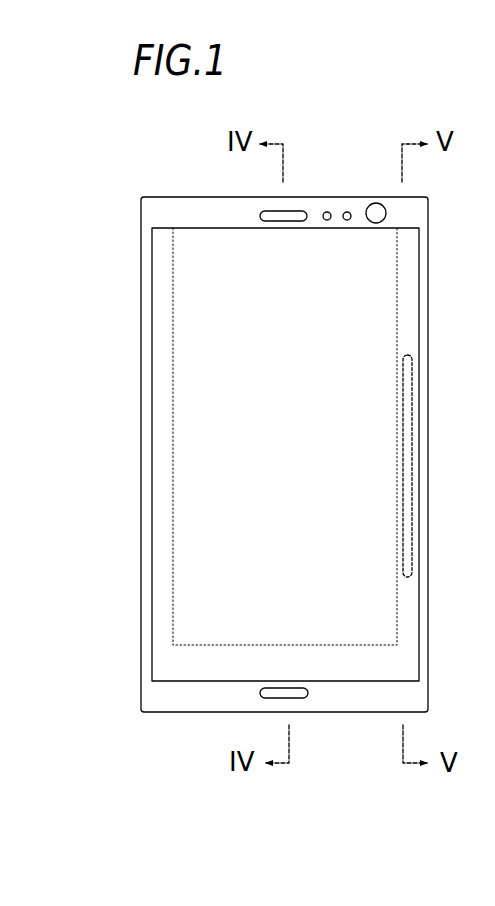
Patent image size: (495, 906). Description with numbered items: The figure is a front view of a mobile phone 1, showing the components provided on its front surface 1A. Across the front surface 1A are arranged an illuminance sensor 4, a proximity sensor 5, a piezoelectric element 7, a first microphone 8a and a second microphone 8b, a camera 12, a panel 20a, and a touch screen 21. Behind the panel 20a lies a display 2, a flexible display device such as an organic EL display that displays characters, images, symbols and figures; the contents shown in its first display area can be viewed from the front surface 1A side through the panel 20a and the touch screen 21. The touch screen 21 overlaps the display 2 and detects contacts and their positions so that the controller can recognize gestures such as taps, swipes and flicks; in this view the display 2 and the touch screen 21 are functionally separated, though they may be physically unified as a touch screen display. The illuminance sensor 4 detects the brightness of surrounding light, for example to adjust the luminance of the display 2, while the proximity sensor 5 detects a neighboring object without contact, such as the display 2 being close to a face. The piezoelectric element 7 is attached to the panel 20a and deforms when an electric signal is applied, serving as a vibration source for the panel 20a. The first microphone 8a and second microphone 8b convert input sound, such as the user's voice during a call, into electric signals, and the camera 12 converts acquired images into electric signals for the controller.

The mobile phone 1 is at (172, 151).
The front surface 1A is at (410, 697).
The display 2 is at (182, 411).
The panel 20a is at (172, 264).
The touch screen 21 is at (233, 436).
The illuminance sensor 4 is at (327, 211).
The proximity sensor 5 is at (347, 211).
The piezoelectric element 7 is at (412, 463).
The first microphone 8a is at (278, 210).
The second microphone 8b is at (293, 699).
The camera 12 is at (375, 203).